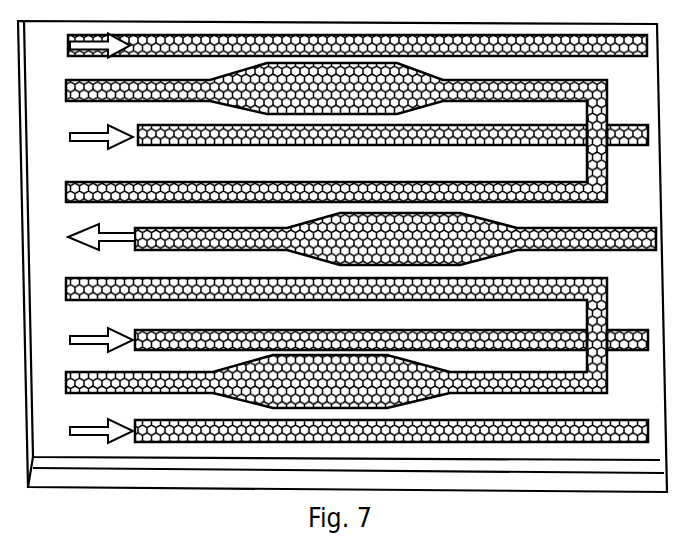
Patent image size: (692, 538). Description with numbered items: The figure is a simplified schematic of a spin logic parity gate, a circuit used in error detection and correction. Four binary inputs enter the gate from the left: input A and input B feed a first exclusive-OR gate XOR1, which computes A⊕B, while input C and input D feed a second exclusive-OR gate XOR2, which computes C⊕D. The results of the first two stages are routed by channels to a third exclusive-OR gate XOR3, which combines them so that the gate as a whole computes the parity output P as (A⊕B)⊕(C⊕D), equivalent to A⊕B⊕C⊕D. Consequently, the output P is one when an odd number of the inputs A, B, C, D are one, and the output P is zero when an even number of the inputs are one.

The input A is at (344, 47).
The input B is at (345, 137).
The input C is at (345, 340).
The input D is at (344, 432).
The output P is at (349, 239).
The first exclusive-OR gate XOR1 is at (336, 132).
The second exclusive-OR gate XOR2 is at (336, 343).
The third exclusive-OR gate XOR3 is at (394, 239).